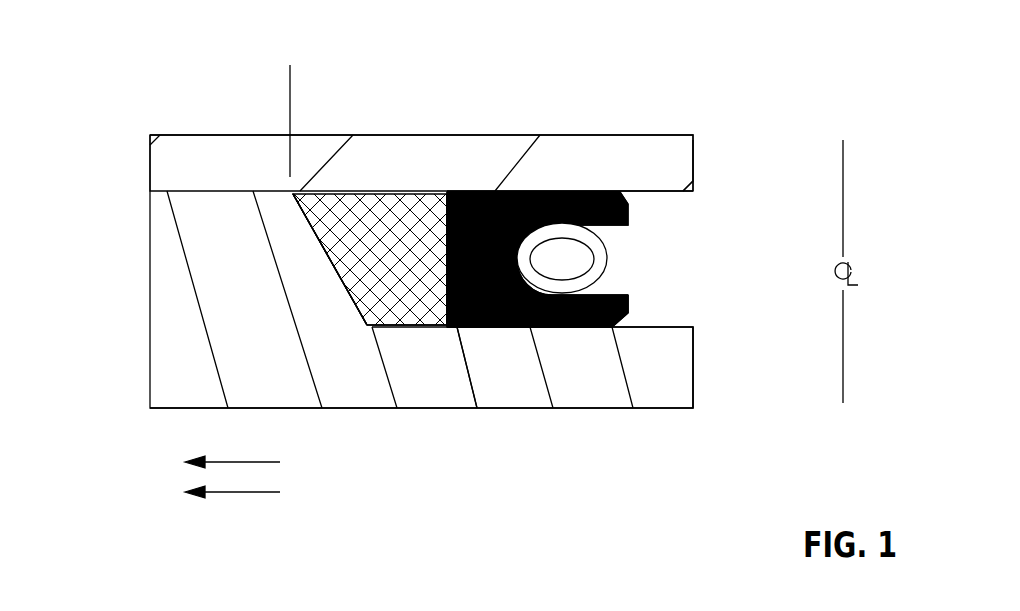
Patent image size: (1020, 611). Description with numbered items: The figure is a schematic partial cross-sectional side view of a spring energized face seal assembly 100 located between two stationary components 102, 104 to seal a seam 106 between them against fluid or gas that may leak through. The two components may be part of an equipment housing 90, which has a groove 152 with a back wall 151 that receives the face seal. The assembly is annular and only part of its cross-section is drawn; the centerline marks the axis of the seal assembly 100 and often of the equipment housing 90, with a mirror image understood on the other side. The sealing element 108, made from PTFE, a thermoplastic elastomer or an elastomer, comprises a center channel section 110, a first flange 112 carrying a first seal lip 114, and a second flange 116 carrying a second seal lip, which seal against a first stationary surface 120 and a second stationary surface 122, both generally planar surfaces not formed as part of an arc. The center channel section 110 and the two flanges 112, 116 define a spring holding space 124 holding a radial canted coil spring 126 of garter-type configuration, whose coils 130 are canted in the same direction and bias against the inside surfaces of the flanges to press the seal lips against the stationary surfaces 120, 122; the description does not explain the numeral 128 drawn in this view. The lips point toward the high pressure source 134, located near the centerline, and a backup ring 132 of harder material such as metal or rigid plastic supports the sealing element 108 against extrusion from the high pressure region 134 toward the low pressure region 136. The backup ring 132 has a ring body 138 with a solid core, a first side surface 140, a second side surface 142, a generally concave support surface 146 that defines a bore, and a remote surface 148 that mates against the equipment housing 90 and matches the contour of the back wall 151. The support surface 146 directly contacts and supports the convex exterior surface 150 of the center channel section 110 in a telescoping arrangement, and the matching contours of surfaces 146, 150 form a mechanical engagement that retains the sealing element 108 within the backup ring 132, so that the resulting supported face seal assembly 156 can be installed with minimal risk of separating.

The equipment housing 90 is at (149, 132).
The face seal assembly 100 is at (638, 193).
The first stationary component 102 is at (190, 160).
The second stationary component 104 is at (183, 395).
The seam 106 is at (150, 190).
The sealing element 108 is at (495, 191).
The center channel section 110 is at (380, 325).
The first flange 112 is at (560, 191).
The first seal lip 114 is at (585, 191).
The second flange 116 is at (593, 327).
The first stationary surface 120 is at (682, 197).
The second stationary surface 122 is at (677, 328).
The spring holding space 124 is at (570, 262).
The canted coil spring 126 is at (597, 268).
The lower leg 128 is at (565, 327).
The coils 130 is at (615, 235).
The backup ring 132 is at (352, 300).
The high pressure source 134 is at (922, 243).
The low pressure region 136 is at (52, 282).
The ring body 138 is at (445, 270).
The first side surface 140 is at (320, 191).
The second side surface 142 is at (388, 325).
The support surface 146 is at (447, 220).
The remote surface 148 is at (355, 301).
The exterior surface 150 is at (445, 242).
The back wall 151 is at (368, 273).
The groove 152 is at (708, 297).
The supported face seal assembly 156 is at (483, 343).